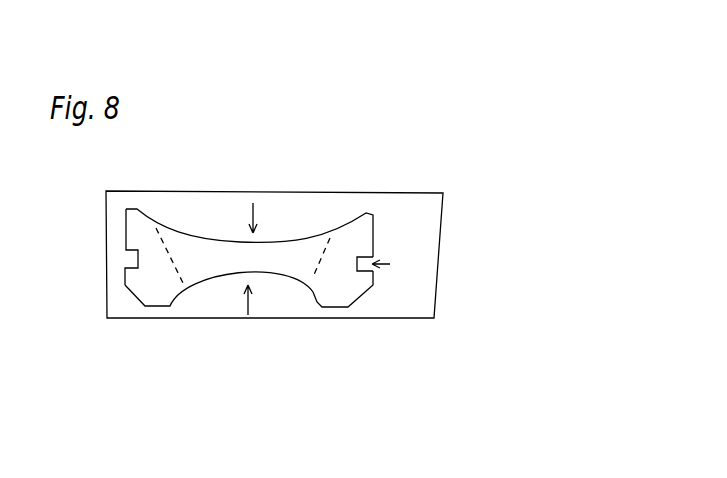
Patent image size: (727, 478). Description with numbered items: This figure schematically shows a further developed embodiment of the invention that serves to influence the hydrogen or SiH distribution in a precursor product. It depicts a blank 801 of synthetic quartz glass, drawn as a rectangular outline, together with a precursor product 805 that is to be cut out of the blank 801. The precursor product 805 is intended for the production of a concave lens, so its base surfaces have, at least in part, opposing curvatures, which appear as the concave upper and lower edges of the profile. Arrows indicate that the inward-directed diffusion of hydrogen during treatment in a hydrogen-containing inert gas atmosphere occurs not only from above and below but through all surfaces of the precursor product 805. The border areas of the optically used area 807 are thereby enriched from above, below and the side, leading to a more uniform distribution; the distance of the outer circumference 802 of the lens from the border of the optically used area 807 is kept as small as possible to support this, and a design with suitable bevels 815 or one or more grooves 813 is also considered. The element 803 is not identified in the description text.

The blank 801 is at (510, 180).
The outer circumference 802 is at (377, 233).
The outer body block 803 is at (443, 250).
The precursor product 805 is at (370, 280).
The optically used area 807 is at (313, 277).
The groove 813 is at (135, 257).
The bevel 815 is at (137, 296).